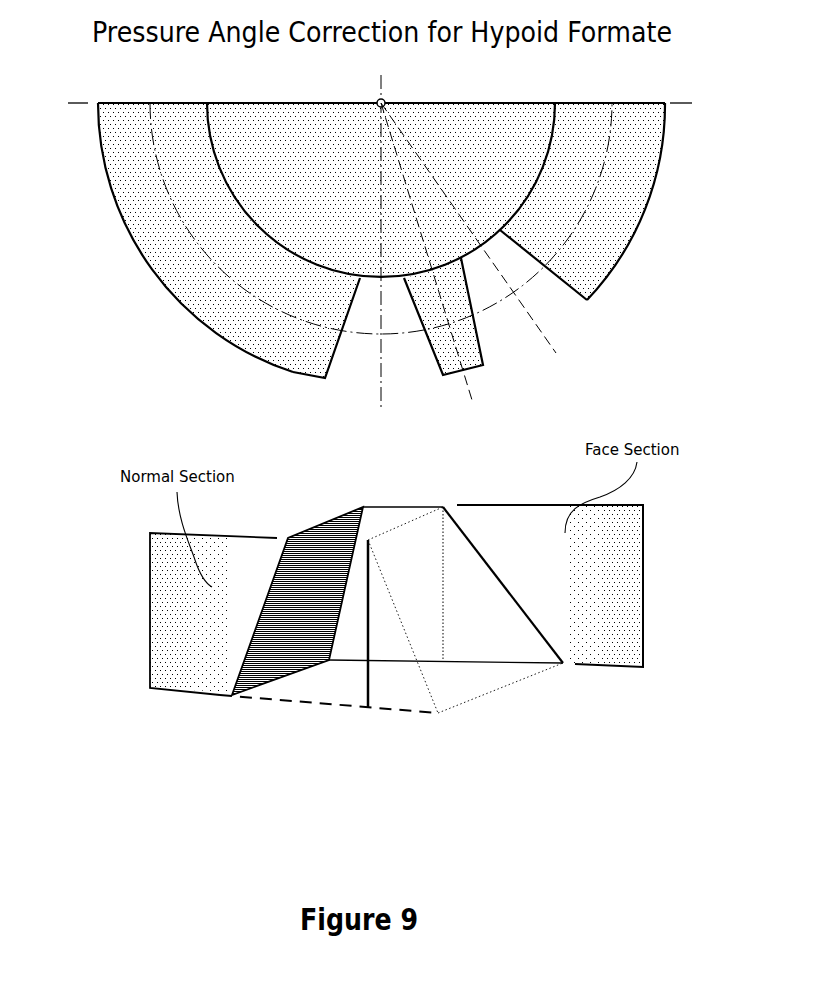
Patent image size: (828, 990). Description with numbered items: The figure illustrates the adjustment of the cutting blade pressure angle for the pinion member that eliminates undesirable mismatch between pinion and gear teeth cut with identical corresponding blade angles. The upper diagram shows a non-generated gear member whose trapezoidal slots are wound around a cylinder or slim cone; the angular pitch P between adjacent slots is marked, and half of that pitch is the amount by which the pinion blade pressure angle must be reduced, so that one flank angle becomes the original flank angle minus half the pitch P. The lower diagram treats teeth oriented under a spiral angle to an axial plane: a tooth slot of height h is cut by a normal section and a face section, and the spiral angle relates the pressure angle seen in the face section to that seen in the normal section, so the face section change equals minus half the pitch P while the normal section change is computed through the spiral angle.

The angular pitch P is at (381, 191).
The tooth height h is at (366, 617).